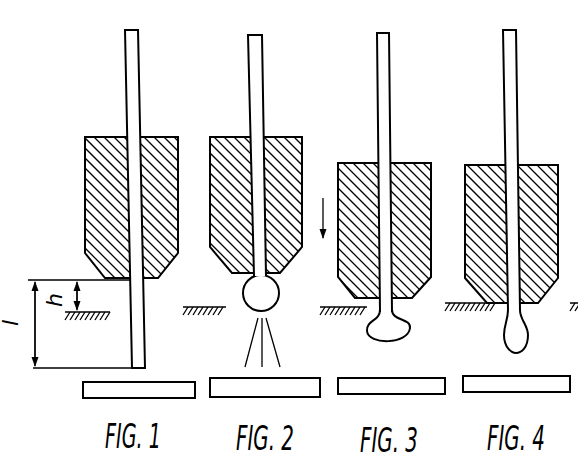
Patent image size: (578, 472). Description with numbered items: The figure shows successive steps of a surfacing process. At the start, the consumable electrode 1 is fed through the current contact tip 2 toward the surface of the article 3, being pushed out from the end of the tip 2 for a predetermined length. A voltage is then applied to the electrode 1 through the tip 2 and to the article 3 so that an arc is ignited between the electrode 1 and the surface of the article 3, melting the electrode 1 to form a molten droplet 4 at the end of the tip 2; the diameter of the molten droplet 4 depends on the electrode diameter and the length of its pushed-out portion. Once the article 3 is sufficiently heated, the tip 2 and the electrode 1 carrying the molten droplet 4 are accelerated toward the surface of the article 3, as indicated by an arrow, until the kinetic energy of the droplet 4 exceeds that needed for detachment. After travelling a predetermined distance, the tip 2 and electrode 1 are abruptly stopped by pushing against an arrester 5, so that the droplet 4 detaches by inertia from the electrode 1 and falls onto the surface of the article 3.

In FIG. 1, the consumable electrode 1 is at (137, 101).
In FIG. 2, the consumable electrode 1 is at (260, 110).
In FIG. 3, the consumable electrode 1 is at (383, 110).
In FIG. 4, the consumable electrode 1 is at (512, 97).
In FIG. 1, the current contact tip 2 is at (93, 148).
In FIG. 2, the current contact tip 2 is at (252, 205).
In FIG. 3, the current contact tip 2 is at (380, 230).
In FIG. 4, the current contact tip 2 is at (452, 234).
In FIG. 1, the article 3 is at (85, 390).
In FIG. 2, the article 3 is at (226, 378).
In FIG. 3, the article 3 is at (353, 379).
In FIG. 4, the article 3 is at (484, 376).
In FIG. 2, the molten droplet 4 is at (268, 302).
In FIG. 3, the molten droplet 4 is at (398, 329).
In FIG. 4, the molten droplet 4 is at (520, 338).
In FIG. 2, the arrester 5 is at (197, 307).
In FIG. 3, the arrester 5 is at (331, 307).
In FIG. 4, the arrester 5 is at (458, 303).